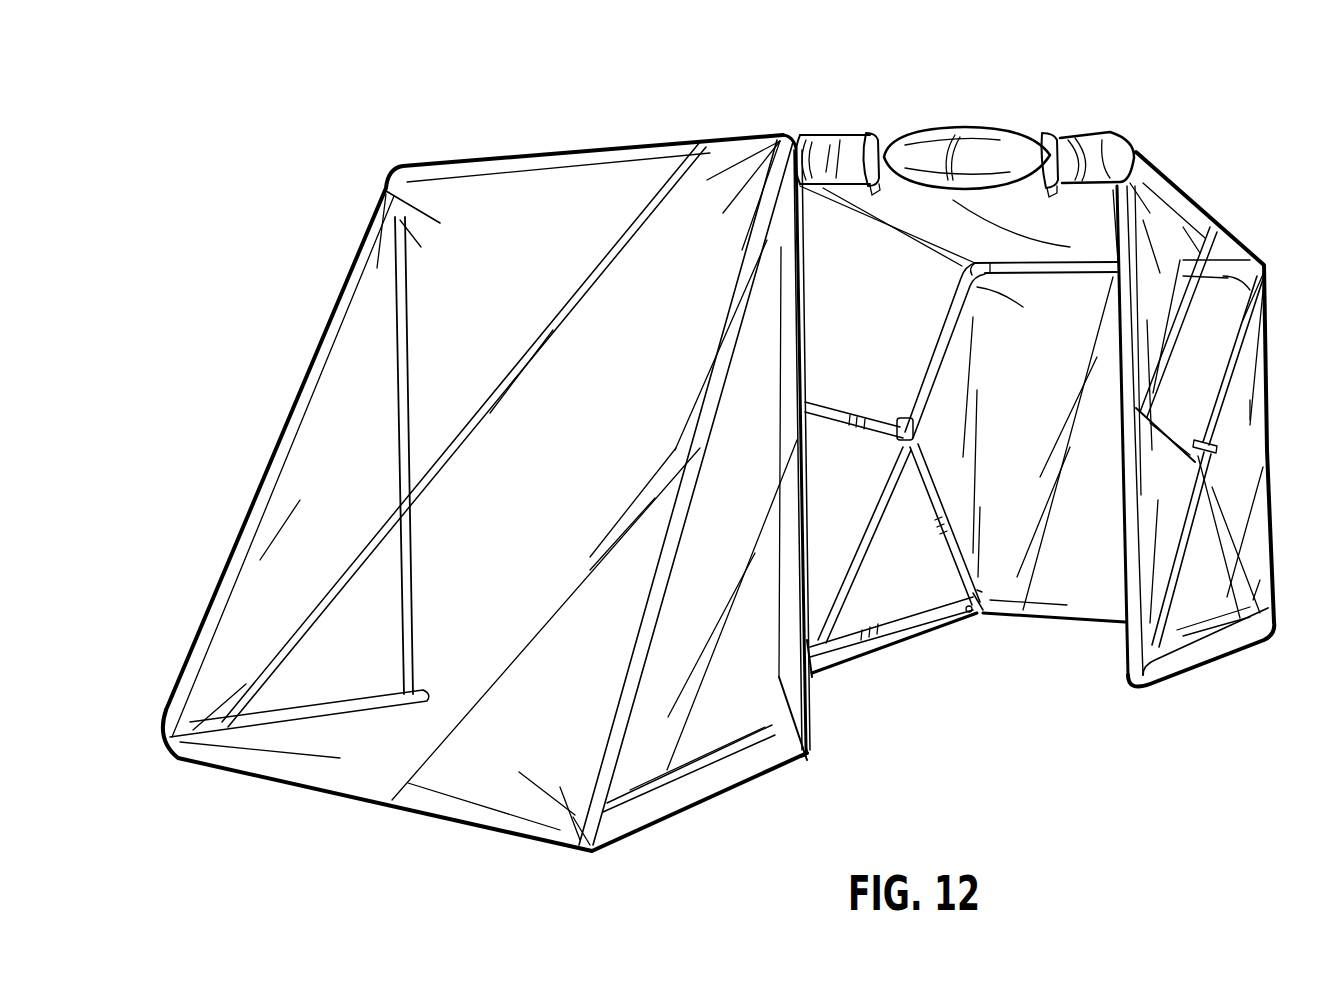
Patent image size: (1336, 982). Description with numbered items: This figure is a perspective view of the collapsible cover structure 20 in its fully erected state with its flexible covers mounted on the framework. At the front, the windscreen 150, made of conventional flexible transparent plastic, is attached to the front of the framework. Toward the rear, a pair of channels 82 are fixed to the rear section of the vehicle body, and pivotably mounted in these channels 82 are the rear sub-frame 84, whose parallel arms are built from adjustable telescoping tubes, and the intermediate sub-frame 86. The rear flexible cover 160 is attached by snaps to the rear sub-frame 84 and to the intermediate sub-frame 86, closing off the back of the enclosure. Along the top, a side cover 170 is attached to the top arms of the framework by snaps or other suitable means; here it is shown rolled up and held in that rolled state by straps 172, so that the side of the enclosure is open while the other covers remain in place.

The collapsible cover structure 20 is at (683, 138).
The straps 172 is at (889, 135).
The side covers 170 is at (1008, 147).
The intermediate sub-frame 86 is at (1080, 252).
The rear flexible cover 160 is at (1218, 232).
The rear sub-frame 84 is at (830, 520).
The channels 82 is at (1222, 638).
The windscreen 150 is at (456, 795).